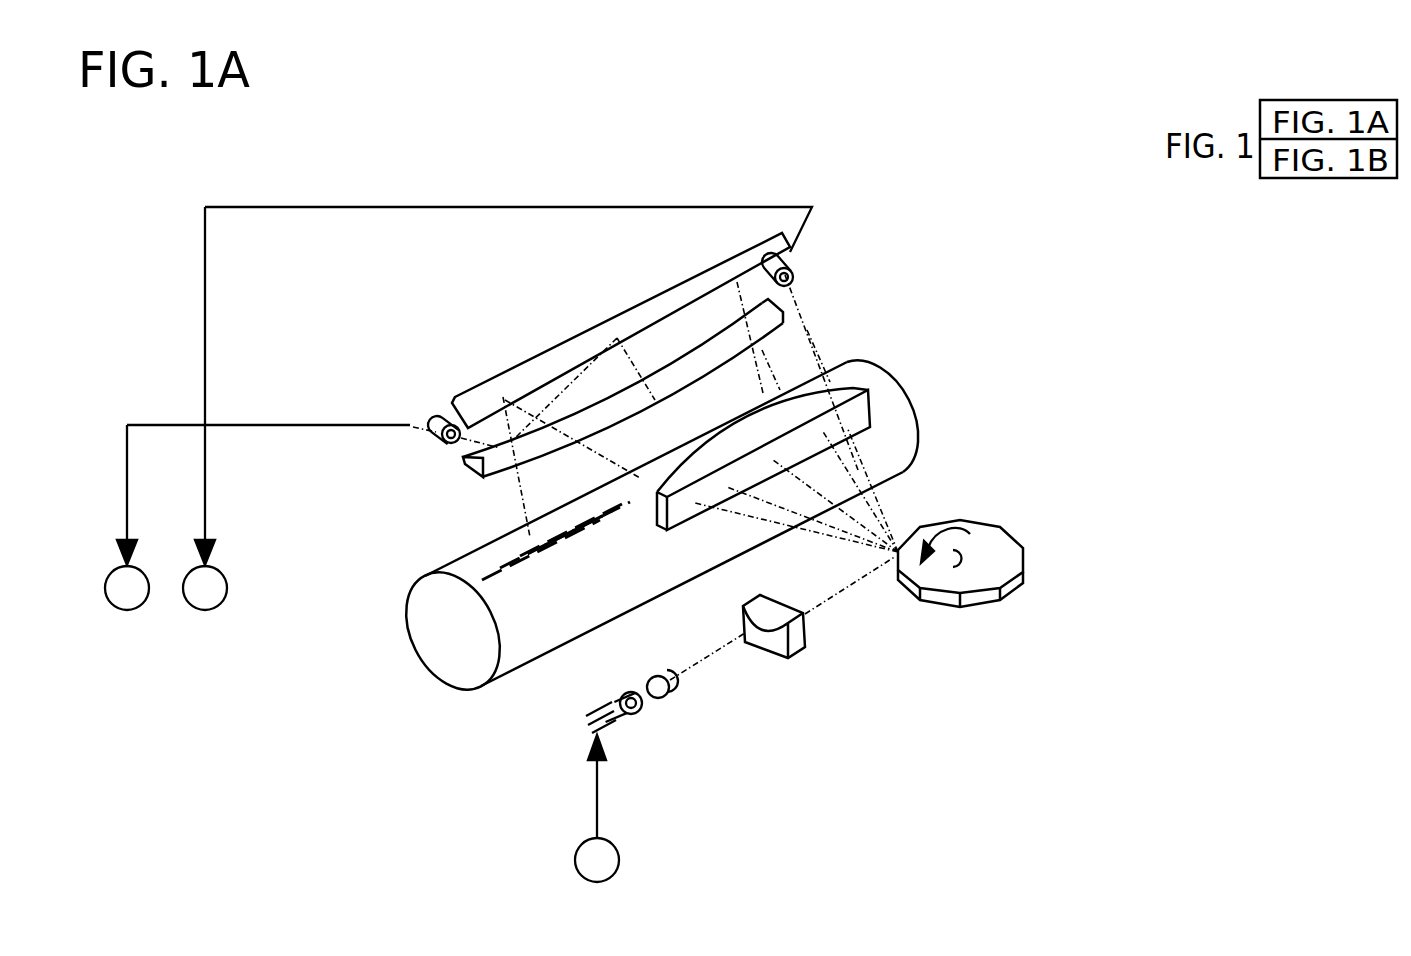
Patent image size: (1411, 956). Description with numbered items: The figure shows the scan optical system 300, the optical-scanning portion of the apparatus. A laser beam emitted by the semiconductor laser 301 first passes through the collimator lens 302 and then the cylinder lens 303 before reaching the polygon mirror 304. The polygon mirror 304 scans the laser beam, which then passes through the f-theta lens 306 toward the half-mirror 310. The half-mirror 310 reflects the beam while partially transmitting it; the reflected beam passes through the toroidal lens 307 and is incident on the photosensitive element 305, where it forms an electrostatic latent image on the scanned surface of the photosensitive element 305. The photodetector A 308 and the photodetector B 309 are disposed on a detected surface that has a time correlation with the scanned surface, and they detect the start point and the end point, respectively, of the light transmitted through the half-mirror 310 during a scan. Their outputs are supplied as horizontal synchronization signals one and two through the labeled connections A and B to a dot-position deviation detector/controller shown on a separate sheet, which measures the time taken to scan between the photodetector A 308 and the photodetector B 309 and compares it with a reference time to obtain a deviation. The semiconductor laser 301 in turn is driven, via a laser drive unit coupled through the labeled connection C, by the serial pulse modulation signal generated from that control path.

The scan optical system 300 is at (1177, 267).
The semiconductor laser 301 is at (607, 697).
The collimator lens 302 is at (661, 690).
The cylinder lens 303 is at (806, 648).
The polygon mirror 304 is at (1050, 500).
The photosensitive element 305 is at (920, 399).
The f-theta lens 306 is at (850, 364).
The toroidal lens 307 is at (783, 306).
The photodetector A 308 is at (838, 200).
The photodetector B 309 is at (437, 445).
The half-mirror 310 is at (683, 302).